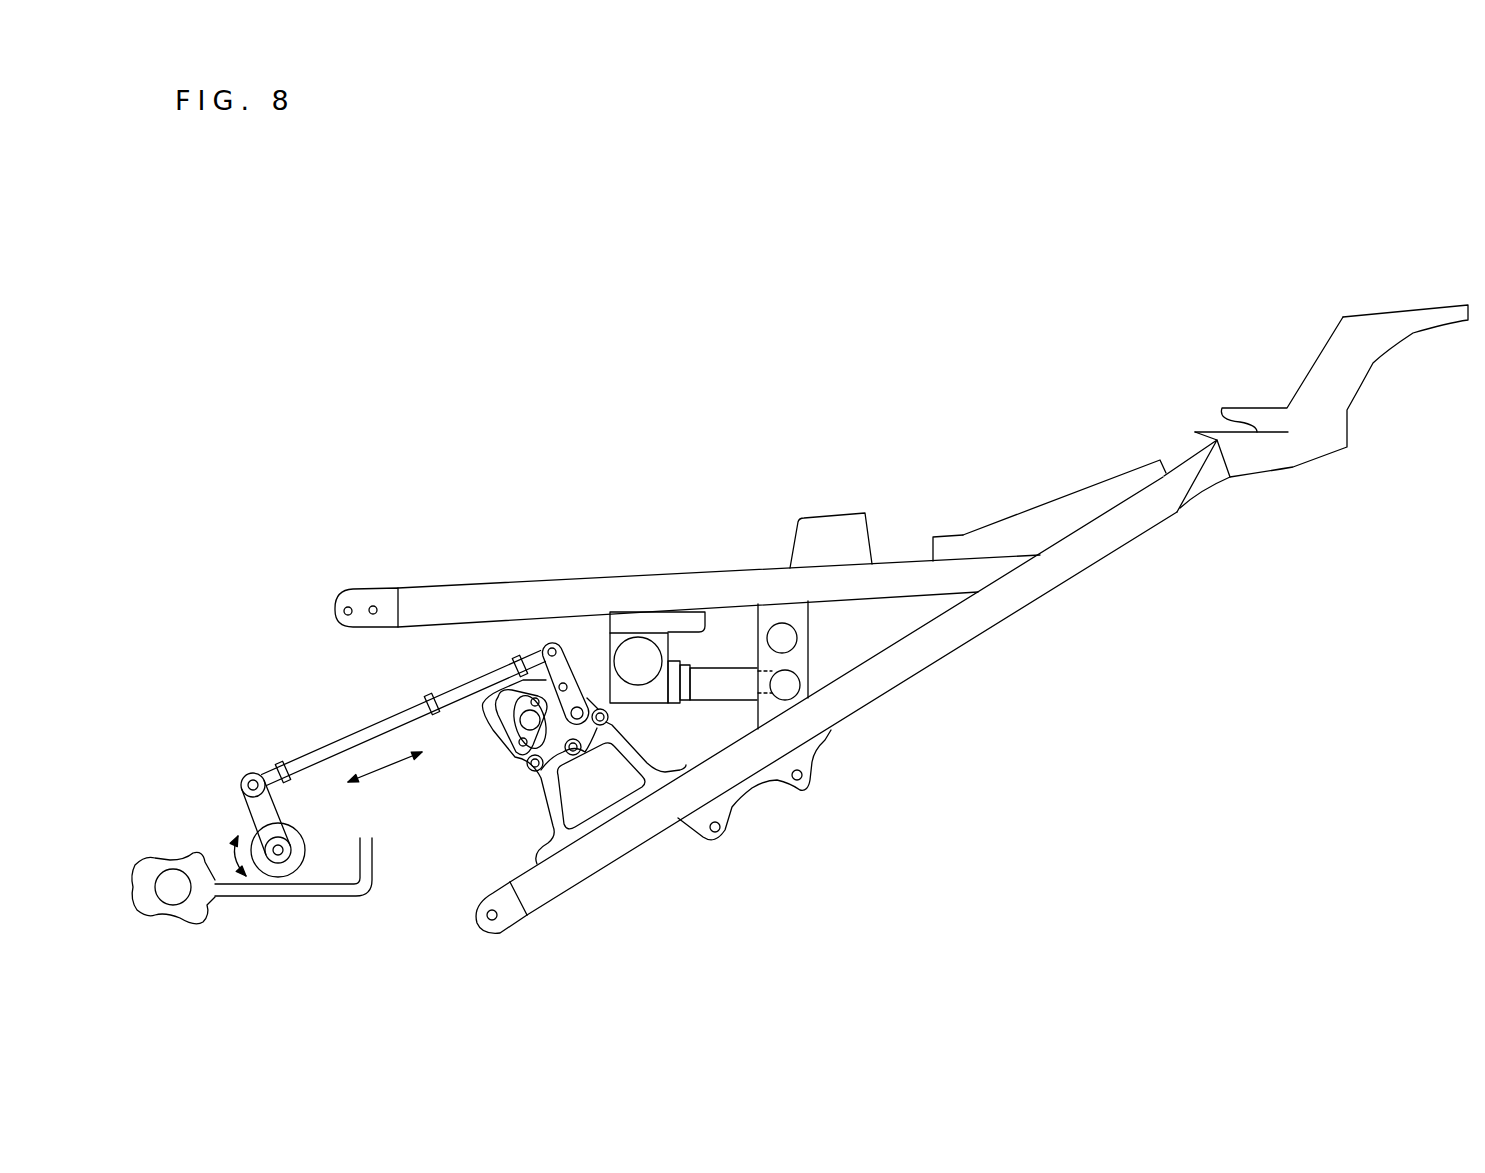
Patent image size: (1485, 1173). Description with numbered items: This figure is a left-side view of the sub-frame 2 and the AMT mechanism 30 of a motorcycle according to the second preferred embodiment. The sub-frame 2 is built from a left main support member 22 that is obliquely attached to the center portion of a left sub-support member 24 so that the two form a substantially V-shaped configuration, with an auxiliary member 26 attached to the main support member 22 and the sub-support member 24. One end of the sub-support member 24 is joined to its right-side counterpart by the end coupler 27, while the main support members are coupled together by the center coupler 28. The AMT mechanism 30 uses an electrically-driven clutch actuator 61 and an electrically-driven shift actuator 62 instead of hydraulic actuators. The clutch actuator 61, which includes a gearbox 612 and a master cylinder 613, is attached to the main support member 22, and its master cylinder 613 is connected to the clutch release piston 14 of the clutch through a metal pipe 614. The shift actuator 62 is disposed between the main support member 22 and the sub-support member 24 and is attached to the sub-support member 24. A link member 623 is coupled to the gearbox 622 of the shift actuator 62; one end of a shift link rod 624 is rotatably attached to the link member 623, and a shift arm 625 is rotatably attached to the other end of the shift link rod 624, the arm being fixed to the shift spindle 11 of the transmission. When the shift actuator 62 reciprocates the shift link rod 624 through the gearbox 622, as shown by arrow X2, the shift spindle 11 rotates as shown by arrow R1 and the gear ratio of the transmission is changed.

The sub-frame 2 is at (1099, 305).
The shift spindle 11 is at (281, 856).
The clutch release piston 14 is at (169, 880).
The main support member 22 is at (549, 588).
The sub-support member 24 is at (862, 697).
The auxiliary member 26 is at (768, 690).
The end coupler 27 is at (1307, 412).
The center coupler 28 is at (828, 525).
The AMT mechanism 30 is at (409, 740).
The clutch actuator 61 is at (702, 740).
The shift actuator 62 is at (522, 767).
The gearbox 612 is at (645, 658).
The master cylinder 613 is at (722, 614).
The metal pipe 614 is at (337, 897).
The gearbox 622 is at (507, 725).
The link member 623 is at (570, 648).
The shift link rod 624 is at (345, 745).
The shift arm 625 is at (248, 812).
The arrow R1 is at (233, 855).
The arrow X2 is at (385, 784).